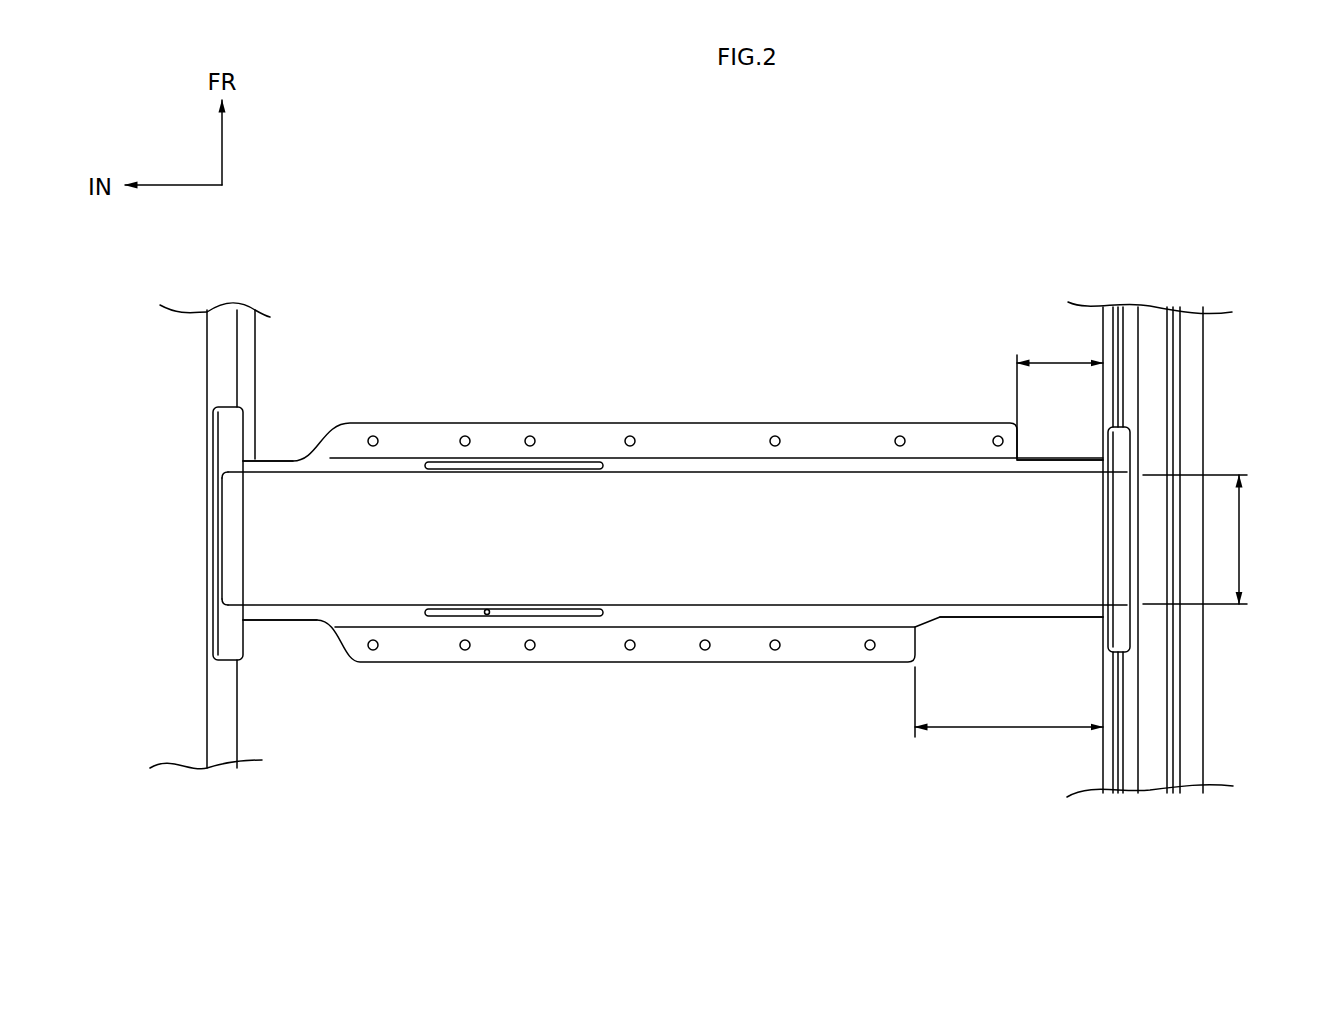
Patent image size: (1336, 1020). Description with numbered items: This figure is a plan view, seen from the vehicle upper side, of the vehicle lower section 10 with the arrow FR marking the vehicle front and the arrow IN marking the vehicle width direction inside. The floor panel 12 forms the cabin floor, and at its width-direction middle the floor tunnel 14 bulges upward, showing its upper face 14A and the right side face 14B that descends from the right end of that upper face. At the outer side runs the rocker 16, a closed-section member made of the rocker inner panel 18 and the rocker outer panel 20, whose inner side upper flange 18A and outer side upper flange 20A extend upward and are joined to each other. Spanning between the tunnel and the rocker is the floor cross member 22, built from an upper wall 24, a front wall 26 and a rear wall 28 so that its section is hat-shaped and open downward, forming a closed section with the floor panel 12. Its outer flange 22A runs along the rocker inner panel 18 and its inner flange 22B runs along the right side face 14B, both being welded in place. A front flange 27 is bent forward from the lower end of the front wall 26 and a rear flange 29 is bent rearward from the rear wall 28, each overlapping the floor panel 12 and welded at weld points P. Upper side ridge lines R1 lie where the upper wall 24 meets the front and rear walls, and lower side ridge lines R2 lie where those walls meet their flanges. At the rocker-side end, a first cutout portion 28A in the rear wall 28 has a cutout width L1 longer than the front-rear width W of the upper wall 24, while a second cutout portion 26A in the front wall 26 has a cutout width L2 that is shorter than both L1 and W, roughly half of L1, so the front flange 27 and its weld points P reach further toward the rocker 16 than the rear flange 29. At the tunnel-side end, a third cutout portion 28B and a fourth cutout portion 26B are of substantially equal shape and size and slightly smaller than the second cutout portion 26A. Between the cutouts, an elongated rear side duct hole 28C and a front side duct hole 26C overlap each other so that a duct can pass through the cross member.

The vehicle lower section 10 is at (782, 198).
The floor panel 12 is at (546, 234).
The floor tunnel 14 is at (246, 512).
The upper face 14A is at (188, 355).
The right side face 14B is at (228, 702).
The rocker 16 is at (1156, 541).
The rocker inner panel 18 is at (1083, 541).
The inner side upper flange 18A is at (1163, 752).
The rocker outer panel 20 is at (1243, 550).
The outer side upper flange 20A is at (1180, 752).
The floor cross member 22 is at (690, 521).
The outer flange 22A is at (1112, 428).
The inner flange 22B is at (225, 663).
The upper wall 24 is at (825, 490).
The front wall 26 is at (673, 381).
The second cutout portion 26A is at (1057, 460).
The fourth cutout portion 26B is at (302, 459).
The front side duct hole 26C is at (511, 461).
The front flange 27 is at (458, 421).
The rear wall 28 is at (673, 696).
The first cutout portion 28A is at (1032, 620).
The third cutout portion 28B is at (283, 622).
The rear side duct hole 28C is at (487, 618).
The rear flange 29 is at (707, 664).
The upper side ridge lines R1 is at (765, 470).
The lower side ridge lines R2 is at (683, 456).
The weld points P is at (998, 434).
The cutout width L1 is at (998, 735).
The cutout width L2 is at (1058, 360).
The front-rear width W is at (1242, 538).